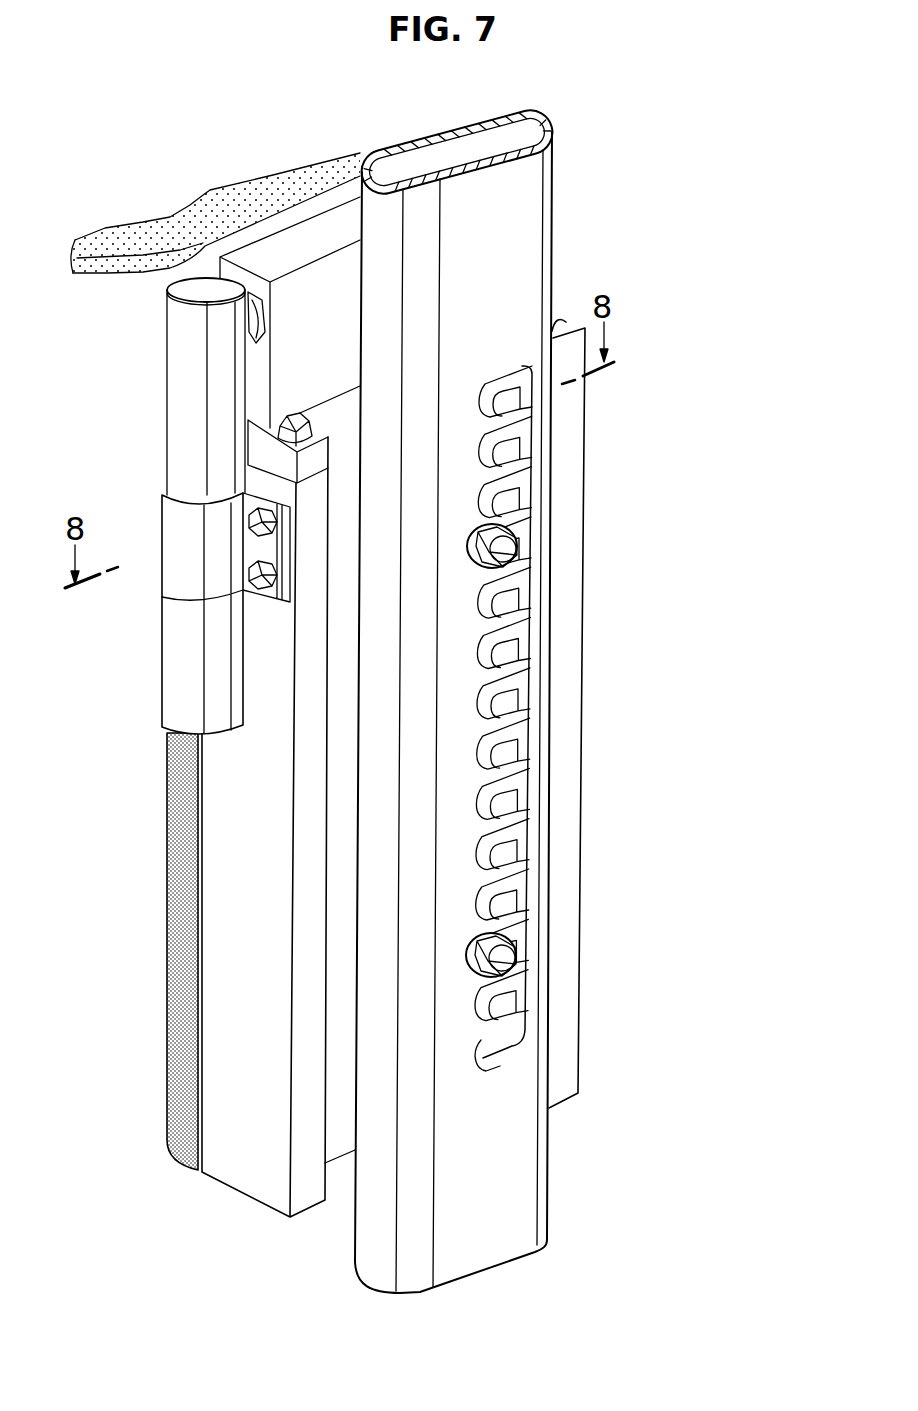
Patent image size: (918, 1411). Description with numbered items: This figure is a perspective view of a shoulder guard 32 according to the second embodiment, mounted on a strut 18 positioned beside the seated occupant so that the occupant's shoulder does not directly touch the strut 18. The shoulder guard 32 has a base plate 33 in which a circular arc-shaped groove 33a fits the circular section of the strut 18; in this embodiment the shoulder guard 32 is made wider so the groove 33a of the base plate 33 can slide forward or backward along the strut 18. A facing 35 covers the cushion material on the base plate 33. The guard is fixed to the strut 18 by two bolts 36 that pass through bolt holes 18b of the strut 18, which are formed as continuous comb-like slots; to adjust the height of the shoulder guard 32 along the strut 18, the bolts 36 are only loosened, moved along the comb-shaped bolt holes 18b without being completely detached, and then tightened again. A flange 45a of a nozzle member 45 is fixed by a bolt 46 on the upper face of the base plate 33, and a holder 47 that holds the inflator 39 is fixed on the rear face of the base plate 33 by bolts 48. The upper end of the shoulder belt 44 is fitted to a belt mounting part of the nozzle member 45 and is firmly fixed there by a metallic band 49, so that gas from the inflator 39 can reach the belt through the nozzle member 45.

The strut 18 is at (568, 264).
The bolt holes 18b is at (500, 683).
The shoulder guard 32 is at (207, 846).
The base plate 33 is at (208, 1187).
The groove 33a is at (343, 683).
The facing 35 is at (177, 822).
The bolts 36 is at (477, 537).
The inflator 39 is at (178, 375).
The shoulder belt 44 is at (123, 257).
The nozzle member 45 is at (321, 214).
The flange 45a is at (315, 457).
The bolt 46 is at (295, 412).
The holder 47 is at (172, 573).
The bolts 48 is at (247, 523).
The metallic band 49 is at (267, 227).